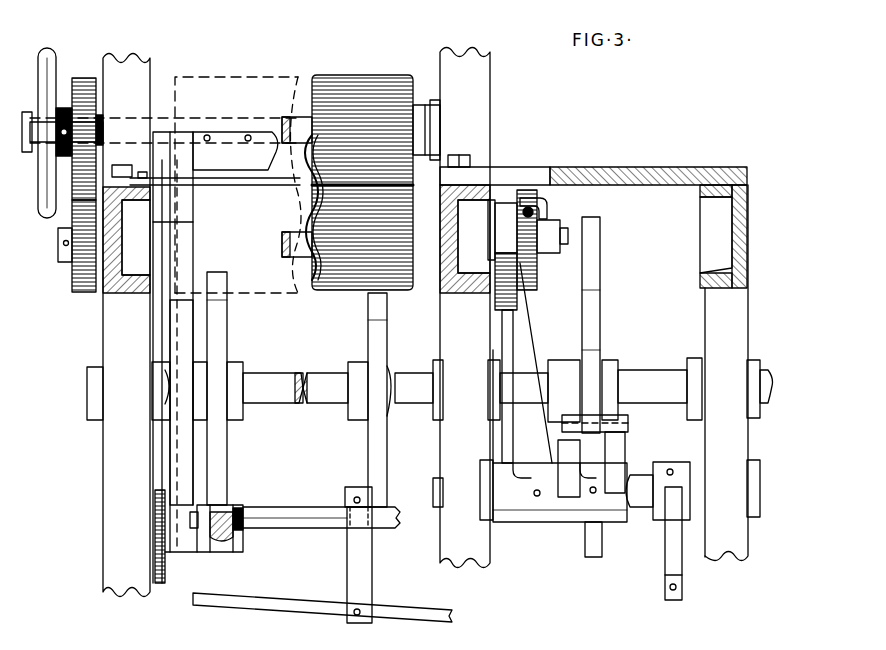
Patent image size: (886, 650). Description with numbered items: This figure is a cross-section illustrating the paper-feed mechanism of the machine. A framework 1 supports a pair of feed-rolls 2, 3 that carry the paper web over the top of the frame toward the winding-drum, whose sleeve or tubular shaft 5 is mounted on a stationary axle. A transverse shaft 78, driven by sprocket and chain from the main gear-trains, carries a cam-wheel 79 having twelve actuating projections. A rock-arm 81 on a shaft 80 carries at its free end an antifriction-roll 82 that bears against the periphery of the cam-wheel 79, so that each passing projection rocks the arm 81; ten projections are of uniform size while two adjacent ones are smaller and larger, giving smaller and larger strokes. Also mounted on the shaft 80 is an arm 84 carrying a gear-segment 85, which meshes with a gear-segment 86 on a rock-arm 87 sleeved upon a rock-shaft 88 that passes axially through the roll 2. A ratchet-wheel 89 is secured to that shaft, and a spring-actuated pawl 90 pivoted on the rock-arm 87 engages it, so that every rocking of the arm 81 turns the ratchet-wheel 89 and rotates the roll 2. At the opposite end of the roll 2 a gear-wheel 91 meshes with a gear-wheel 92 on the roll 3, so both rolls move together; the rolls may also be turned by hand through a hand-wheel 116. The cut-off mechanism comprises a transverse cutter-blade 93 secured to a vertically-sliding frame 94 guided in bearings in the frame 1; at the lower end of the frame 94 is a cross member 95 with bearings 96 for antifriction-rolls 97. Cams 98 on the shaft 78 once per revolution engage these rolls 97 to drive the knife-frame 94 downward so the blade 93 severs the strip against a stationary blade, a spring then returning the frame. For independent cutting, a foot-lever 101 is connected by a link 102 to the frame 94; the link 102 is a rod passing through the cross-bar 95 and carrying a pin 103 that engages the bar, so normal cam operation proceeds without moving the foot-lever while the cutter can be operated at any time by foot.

The framework 1 is at (127, 452).
The feed-roll 2 is at (342, 260).
The feed-roll 3 is at (368, 100).
The sleeve or tubular shaft 5 is at (168, 138).
The shaft 78 is at (640, 378).
The cam-wheel 79 is at (592, 255).
The shaft 80 is at (643, 490).
The rock-arm 81 is at (617, 452).
The antifriction-roll 82 is at (594, 421).
The arm 84 is at (505, 385).
The gear-segment 85 is at (507, 293).
The gear-segment 86 is at (503, 232).
The rock-arm 87 is at (512, 222).
The rock-shaft 88 is at (303, 240).
The ratchet-wheel 89 is at (546, 233).
The spring-actuated pawl 90 is at (522, 200).
The gear-wheel 91 is at (85, 272).
The gear-wheel 92 is at (82, 78).
The cutter-blade 93 is at (222, 148).
The vertically-sliding frame 94 is at (185, 332).
The cross member 95 is at (287, 522).
The bearings 96 is at (237, 520).
The antifriction-rolls 97 is at (217, 518).
The cams 98 is at (377, 343).
The foot-lever 101 is at (213, 603).
The link 102 is at (360, 573).
The pin 103 is at (353, 496).
The hand-wheel 116 is at (46, 65).